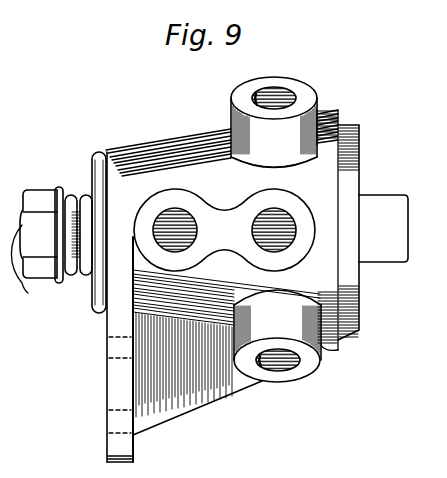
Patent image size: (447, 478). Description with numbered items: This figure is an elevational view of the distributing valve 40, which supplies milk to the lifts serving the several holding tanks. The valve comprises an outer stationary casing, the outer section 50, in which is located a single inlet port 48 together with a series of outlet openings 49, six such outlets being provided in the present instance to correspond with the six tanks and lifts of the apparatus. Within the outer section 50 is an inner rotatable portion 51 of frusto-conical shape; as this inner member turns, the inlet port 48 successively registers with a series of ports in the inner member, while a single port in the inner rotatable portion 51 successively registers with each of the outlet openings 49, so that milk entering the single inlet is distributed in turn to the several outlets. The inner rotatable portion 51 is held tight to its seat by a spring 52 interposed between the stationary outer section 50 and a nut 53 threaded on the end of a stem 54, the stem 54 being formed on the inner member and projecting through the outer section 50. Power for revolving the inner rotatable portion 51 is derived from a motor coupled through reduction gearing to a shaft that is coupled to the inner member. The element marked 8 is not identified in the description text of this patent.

The shank 8 is at (400, 228).
The distributing valve 40 is at (107, 317).
The inlet port 48 is at (183, 208).
The outlet openings 49 is at (259, 212).
The outer section 50 is at (199, 144).
The inner rotatable portion 51 is at (356, 140).
The spring 52 is at (78, 277).
The nut 53 is at (41, 197).
The stem 54 is at (23, 288).